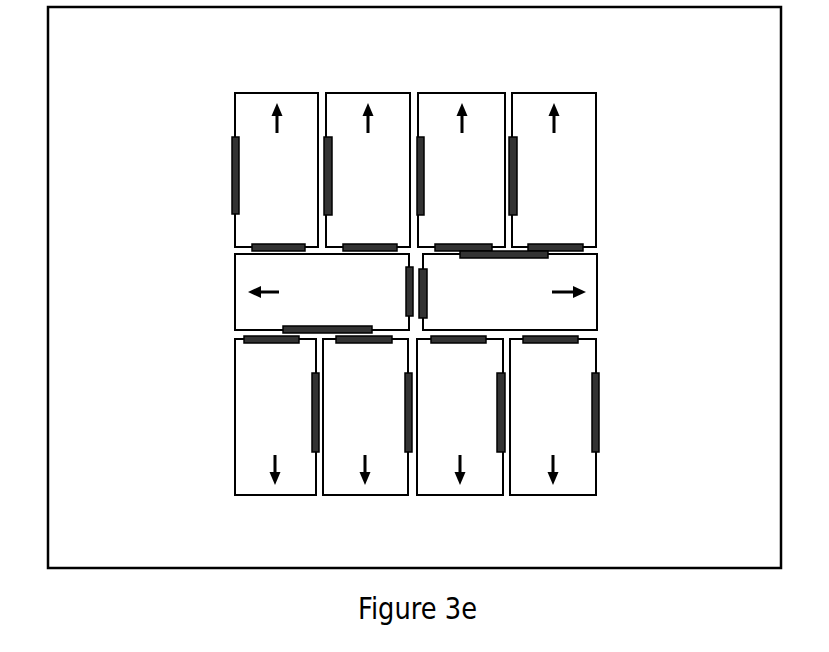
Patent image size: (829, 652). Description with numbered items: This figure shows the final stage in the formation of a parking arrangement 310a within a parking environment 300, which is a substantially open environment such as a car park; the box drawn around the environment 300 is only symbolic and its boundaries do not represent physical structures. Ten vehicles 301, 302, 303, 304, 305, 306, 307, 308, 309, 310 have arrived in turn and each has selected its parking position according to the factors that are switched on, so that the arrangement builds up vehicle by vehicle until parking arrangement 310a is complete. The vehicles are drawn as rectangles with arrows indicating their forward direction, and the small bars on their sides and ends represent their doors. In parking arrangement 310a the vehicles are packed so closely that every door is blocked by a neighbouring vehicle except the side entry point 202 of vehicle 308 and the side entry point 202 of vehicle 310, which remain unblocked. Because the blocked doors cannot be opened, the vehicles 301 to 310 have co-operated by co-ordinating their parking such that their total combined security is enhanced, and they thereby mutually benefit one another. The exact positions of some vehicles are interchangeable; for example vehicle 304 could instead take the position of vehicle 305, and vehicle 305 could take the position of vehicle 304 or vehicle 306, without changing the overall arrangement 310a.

The side entry point 202 is at (232, 157).
The parking environment 300 is at (66, 25).
The vehicle 301 is at (583, 312).
The vehicle 302 is at (243, 315).
The vehicle 303 is at (585, 100).
The vehicle 304 is at (483, 105).
The vehicle 305 is at (245, 470).
The vehicle 306 is at (338, 480).
The vehicle 307 is at (433, 477).
The vehicle 308 is at (582, 473).
The vehicle 309 is at (392, 107).
The vehicle 310 is at (240, 229).
The parking arrangement 310a is at (679, 69).